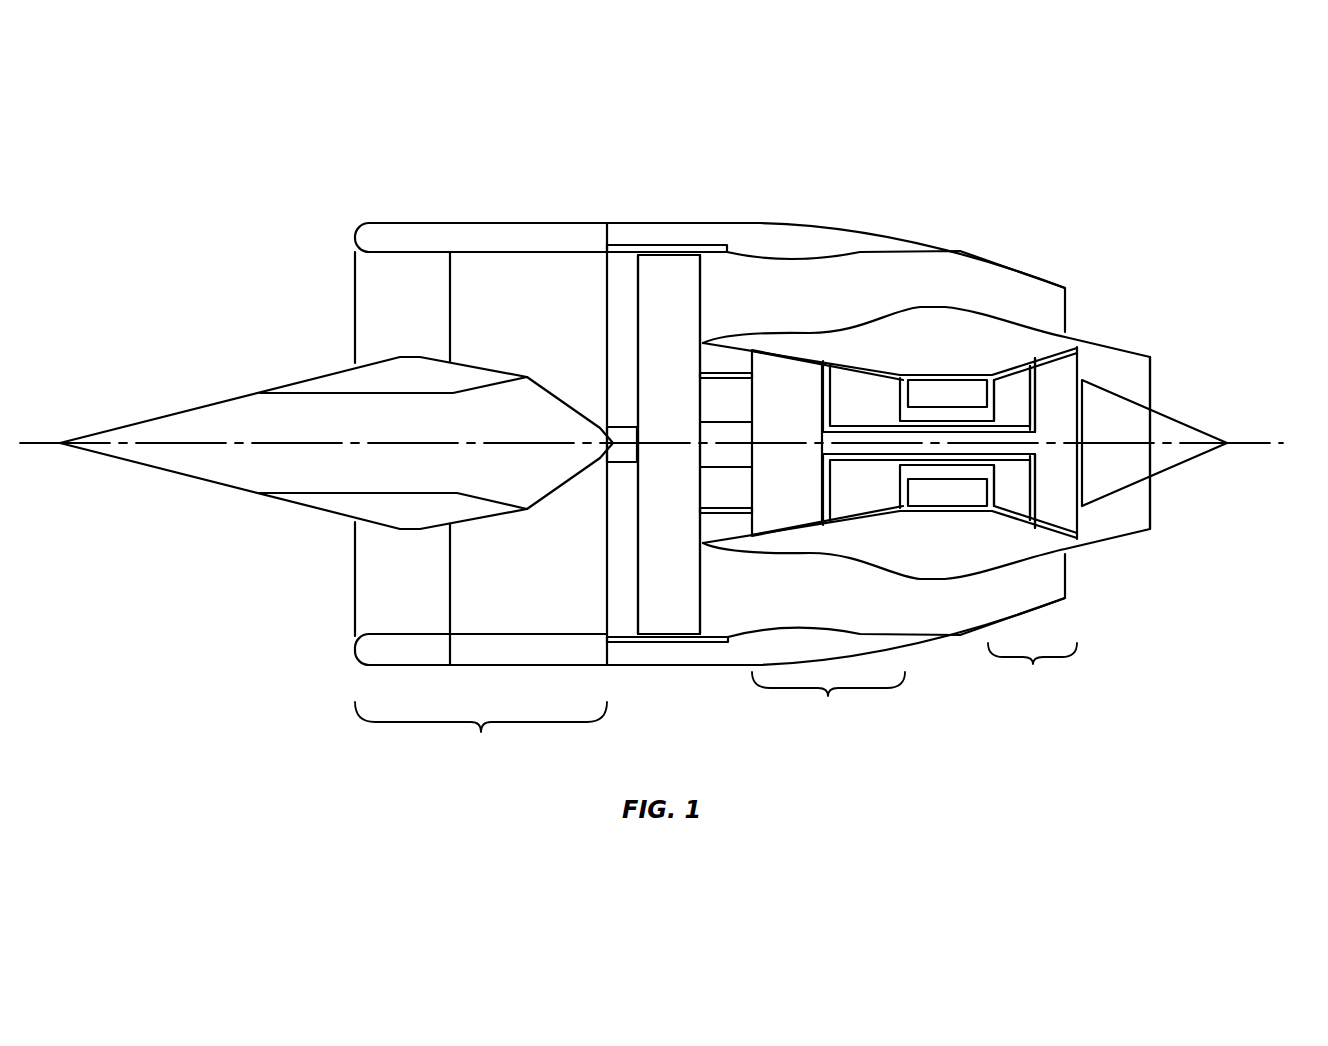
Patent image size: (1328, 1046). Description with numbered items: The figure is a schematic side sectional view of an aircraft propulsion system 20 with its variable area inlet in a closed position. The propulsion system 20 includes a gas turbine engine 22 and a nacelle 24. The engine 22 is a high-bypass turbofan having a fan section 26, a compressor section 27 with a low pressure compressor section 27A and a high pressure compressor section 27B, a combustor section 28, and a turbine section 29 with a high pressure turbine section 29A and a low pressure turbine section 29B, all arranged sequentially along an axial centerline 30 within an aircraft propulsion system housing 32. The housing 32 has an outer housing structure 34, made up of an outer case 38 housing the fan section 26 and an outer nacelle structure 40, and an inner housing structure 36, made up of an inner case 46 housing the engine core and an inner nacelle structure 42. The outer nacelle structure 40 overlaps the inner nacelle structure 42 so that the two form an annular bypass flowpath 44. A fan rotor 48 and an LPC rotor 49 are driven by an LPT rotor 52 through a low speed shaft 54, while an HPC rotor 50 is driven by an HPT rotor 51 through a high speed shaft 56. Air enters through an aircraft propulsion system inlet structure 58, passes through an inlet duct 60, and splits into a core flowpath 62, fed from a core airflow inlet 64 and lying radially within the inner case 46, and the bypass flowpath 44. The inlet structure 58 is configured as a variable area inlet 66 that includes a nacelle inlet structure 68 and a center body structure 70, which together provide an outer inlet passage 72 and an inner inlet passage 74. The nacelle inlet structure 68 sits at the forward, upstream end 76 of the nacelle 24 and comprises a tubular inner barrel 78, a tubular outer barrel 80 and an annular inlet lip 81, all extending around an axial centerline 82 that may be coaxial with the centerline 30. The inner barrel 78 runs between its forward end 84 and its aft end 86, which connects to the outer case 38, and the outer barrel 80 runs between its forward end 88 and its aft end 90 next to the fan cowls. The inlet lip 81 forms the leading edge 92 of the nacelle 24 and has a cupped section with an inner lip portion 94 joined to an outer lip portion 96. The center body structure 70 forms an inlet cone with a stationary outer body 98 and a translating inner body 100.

The aircraft propulsion system 20 is at (1032, 150).
The gas turbine engine 22 is at (622, 553).
The nacelle 24 is at (538, 200).
The fan section 26 is at (710, 612).
The compressor section 27 is at (828, 699).
The low pressure compressor section 27A is at (790, 538).
The high pressure compressor section 27B is at (868, 525).
The combustor section 28 is at (937, 522).
The turbine section 29 is at (1032, 673).
The high pressure turbine section 29A is at (1000, 518).
The low pressure turbine section 29B is at (1050, 538).
The axial centerline 30 is at (672, 490).
The aircraft propulsion system housing 32 is at (695, 175).
The outer housing structure 34 is at (710, 205).
The inner housing structure 36 is at (942, 300).
The outer case 38 is at (643, 244).
The outer nacelle structure 40 is at (762, 222).
The inner nacelle structure 42 is at (1003, 318).
The bypass flowpath 44 is at (846, 323).
The inner case 46 is at (945, 372).
The fan rotor 48 is at (700, 316).
The LPC rotor 49 is at (787, 355).
The HPC rotor 50 is at (873, 372).
The HPT rotor 51 is at (1025, 350).
The LPT rotor 52 is at (1078, 367).
The low speed shaft 54 is at (1017, 440).
The high speed shaft 56 is at (973, 427).
The aircraft propulsion system inlet structure 58 is at (243, 616).
The inlet duct 60 is at (627, 642).
The core flowpath 62 is at (1122, 372).
The core airflow inlet 64 is at (703, 356).
The variable area inlet 66 is at (298, 575).
The nacelle inlet structure 68 is at (481, 733).
The center body structure 70 is at (297, 381).
The outer inlet passage 72 is at (385, 286).
The inner inlet passage 74 is at (375, 505).
The forward upstream end of the nacelle 76 is at (303, 200).
The inner barrel 78 is at (550, 252).
The outer barrel 80 is at (497, 222).
The inlet lip 81 is at (408, 222).
The axial centerline of the variable area inlet 82 is at (1268, 448).
The forward upstream end of the inner barrel 84 is at (455, 252).
The aft downstream end of the inner barrel 86 is at (597, 256).
The forward upstream end of the outer barrel 88 is at (450, 240).
The aft downstream end of the outer barrel 90 is at (607, 240).
The leading edge of the nacelle 92 is at (358, 228).
The inner lip portion 94 is at (408, 252).
The outer lip portion 96 is at (378, 222).
The outer body 98 is at (343, 370).
The inner body 100 is at (195, 408).